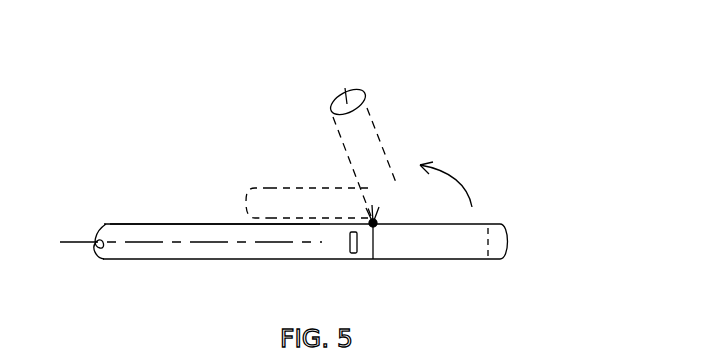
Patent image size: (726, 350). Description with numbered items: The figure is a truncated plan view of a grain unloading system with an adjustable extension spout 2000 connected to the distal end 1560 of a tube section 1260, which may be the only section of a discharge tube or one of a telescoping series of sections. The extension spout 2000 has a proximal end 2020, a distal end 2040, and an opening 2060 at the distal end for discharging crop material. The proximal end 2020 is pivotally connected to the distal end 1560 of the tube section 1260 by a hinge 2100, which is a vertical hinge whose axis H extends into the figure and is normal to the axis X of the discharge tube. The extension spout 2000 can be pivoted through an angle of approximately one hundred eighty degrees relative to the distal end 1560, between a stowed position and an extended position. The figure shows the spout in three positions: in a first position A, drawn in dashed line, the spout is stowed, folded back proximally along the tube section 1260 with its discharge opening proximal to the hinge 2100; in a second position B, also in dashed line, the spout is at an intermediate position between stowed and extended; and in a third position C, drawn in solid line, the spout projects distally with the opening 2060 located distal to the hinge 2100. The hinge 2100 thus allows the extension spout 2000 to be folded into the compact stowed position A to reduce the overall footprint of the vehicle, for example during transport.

The extension spout 2000 is at (460, 250).
The proximal end 2020 is at (383, 258).
The distal end 2040 is at (503, 223).
The opening 2060 is at (510, 243).
The hinge 2100 is at (373, 223).
The tube section 1260 is at (200, 228).
The distal end 1560 is at (368, 260).
The first position A is at (312, 202).
The second position B is at (345, 78).
The third position C is at (503, 260).
The hinge axis H is at (380, 218).
The tube axis X is at (177, 244).